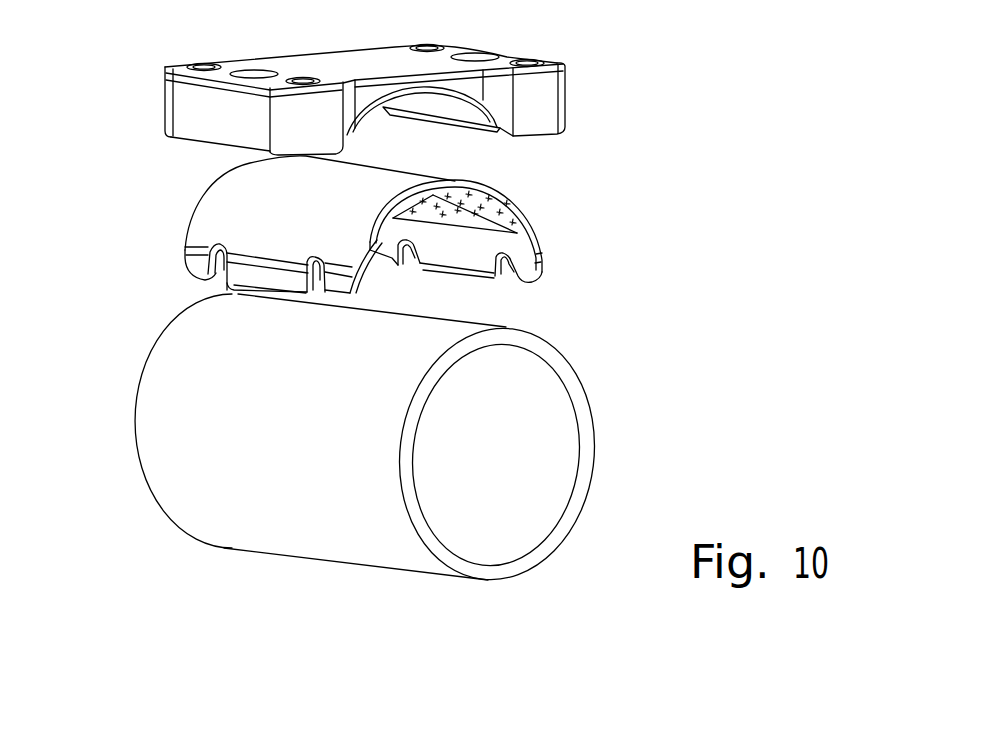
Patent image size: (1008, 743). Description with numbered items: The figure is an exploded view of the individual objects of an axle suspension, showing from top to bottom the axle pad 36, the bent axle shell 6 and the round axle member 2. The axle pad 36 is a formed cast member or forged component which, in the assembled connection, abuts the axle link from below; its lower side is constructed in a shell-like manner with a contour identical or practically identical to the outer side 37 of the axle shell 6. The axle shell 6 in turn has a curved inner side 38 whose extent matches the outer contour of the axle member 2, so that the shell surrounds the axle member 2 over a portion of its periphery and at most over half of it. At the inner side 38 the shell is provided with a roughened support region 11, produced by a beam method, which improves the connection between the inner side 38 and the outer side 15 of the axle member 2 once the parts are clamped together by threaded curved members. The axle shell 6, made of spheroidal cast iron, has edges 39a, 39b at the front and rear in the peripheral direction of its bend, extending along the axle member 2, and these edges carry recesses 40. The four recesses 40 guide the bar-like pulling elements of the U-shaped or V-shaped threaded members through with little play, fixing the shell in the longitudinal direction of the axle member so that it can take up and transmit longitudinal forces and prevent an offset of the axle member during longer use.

The axle member 2 is at (311, 442).
The axle shell 6 is at (355, 340).
The roughened support region 11 is at (500, 222).
The outer side of the axle member 15 is at (185, 473).
The axle pad 36 is at (150, 97).
The outer side of the axle shell 37 is at (272, 228).
The inner side of the axle shell 38 is at (545, 256).
The front edge of the axle shell 39a is at (265, 287).
The rear edge of the axle shell 39b is at (474, 277).
The recess 40 is at (218, 275).